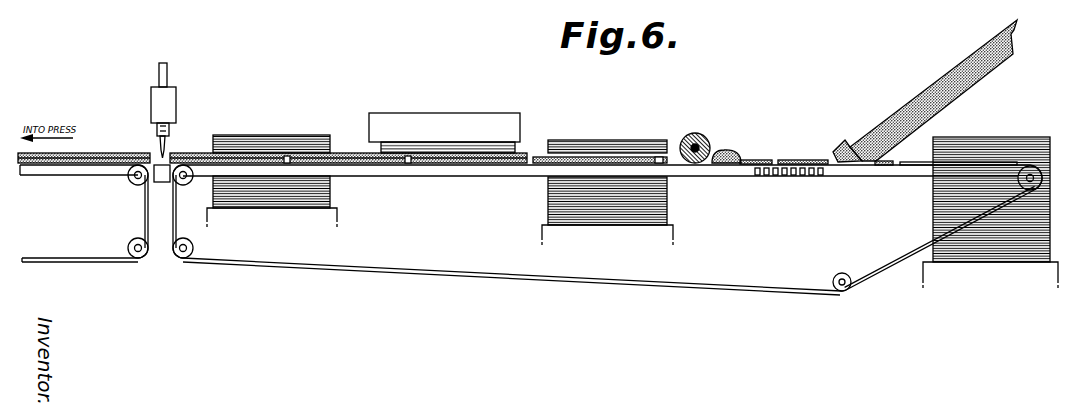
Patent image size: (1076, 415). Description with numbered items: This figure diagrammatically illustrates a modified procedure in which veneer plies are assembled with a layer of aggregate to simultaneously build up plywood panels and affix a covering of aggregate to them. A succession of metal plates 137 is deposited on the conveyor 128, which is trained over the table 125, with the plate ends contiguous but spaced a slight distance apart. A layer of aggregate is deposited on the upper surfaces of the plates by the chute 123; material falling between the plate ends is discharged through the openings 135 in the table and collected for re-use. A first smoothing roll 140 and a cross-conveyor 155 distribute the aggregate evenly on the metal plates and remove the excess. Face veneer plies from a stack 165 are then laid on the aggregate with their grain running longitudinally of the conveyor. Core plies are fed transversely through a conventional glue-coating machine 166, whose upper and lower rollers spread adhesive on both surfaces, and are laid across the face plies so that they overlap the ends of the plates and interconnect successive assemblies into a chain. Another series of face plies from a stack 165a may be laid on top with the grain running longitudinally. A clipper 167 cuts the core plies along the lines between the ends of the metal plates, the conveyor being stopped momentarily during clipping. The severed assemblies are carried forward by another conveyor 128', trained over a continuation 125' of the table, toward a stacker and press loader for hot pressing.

The chute 123 is at (862, 138).
The table 125 is at (600, 185).
The continuation of table 125' is at (83, 181).
The conveyor 128 is at (607, 230).
The conveyor 128' is at (85, 213).
The openings 135 is at (797, 177).
The metal plates 137 is at (963, 141).
The smoothing roll 140 is at (673, 212).
The cross-conveyor 155 is at (729, 152).
The stack of veneer plies 165 is at (580, 143).
The stack of face plies 165a is at (243, 140).
The glue-coating machine 166 is at (378, 121).
The clipper 167 is at (170, 107).